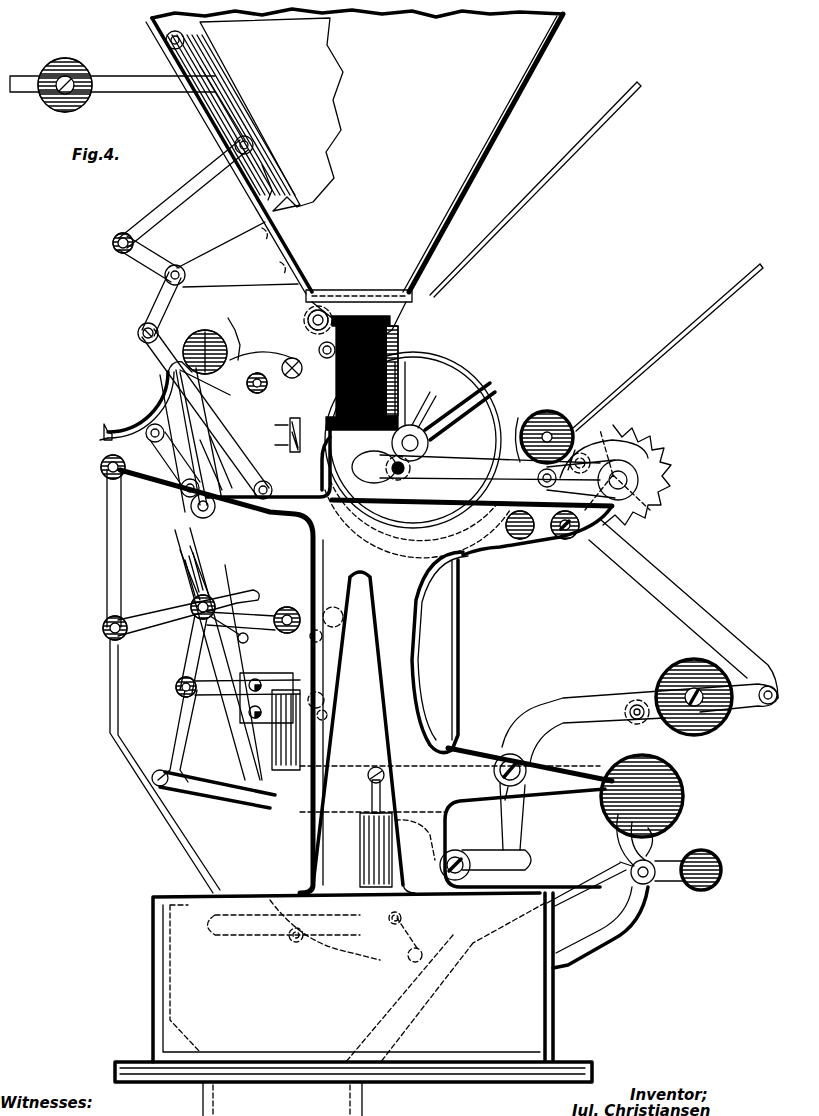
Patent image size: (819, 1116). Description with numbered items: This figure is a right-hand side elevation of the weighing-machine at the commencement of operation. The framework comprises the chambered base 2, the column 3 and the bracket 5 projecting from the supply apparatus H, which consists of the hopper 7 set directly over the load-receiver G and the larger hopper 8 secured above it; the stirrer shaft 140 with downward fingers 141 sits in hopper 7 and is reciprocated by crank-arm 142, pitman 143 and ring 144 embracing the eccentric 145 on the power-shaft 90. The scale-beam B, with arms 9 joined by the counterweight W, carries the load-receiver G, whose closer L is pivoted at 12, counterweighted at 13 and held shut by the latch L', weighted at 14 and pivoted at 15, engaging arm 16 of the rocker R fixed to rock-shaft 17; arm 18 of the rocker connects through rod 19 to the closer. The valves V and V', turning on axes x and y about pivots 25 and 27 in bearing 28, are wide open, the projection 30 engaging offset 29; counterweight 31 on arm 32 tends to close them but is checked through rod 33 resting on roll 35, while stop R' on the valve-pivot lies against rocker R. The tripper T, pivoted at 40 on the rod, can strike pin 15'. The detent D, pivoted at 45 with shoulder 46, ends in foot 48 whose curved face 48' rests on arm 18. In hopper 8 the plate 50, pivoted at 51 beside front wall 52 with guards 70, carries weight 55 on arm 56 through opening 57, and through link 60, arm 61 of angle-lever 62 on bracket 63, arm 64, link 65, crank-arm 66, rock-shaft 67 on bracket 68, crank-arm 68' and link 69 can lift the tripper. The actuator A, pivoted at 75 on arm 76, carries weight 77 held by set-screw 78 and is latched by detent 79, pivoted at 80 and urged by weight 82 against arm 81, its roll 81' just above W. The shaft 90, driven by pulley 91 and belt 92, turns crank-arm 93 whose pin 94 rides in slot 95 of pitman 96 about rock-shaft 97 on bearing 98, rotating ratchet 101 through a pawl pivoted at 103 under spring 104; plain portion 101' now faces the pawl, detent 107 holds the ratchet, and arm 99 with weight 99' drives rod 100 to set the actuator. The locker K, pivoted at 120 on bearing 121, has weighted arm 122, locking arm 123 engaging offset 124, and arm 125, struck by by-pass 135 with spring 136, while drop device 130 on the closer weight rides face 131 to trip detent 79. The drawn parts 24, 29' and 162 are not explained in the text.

The chambered base 2 is at (170, 980).
The column 3 is at (416, 652).
The bracket 5 is at (385, 320).
The hopper 7 is at (398, 322).
The hopper 8 is at (486, 128).
The arm 9 is at (352, 800).
The pivot 12 is at (300, 942).
The counterweight 13 is at (393, 958).
The counterweight 14 is at (328, 645).
The pivot 15 is at (286, 630).
The pin 15' is at (229, 642).
The arm 16 is at (200, 622).
The rock-shaft 17 is at (160, 495).
The arm 18 is at (170, 455).
The rod 19 is at (230, 736).
The slide 24 is at (290, 436).
The pivot 25 is at (280, 362).
The pivot 27 is at (215, 458).
The bearing 28 is at (362, 373).
The stop or offset 29 is at (176, 374).
The roller 29' is at (200, 340).
The lateral projection 30 is at (208, 433).
The counterweight 31 is at (150, 325).
The arm 32 is at (236, 325).
The rod 33 is at (172, 718).
The antifriction-roll 35 is at (155, 785).
The pivot 40 is at (196, 616).
The pivot 45 is at (345, 320).
The shoulder 46 is at (320, 345).
The foot 48 is at (87, 420).
The under curved face 48' is at (82, 437).
The plate 50 is at (210, 110).
The pivot 51 is at (165, 42).
The forward wall 52 is at (262, 196).
The weight 55 is at (60, 62).
The arm 56 is at (130, 80).
The opening 57 is at (196, 72).
The link 60 is at (108, 553).
The arm 61 is at (118, 480).
The angle-lever 62 is at (175, 526).
The bracket 63 is at (195, 556).
The arm 64 is at (255, 488).
The link 65 is at (150, 342).
The crank-arm 66 is at (163, 290).
The rock-shaft 67 is at (188, 273).
The bracket 68 is at (237, 254).
The crank-arm 68' is at (133, 257).
The link 69 is at (175, 200).
The flexible guard 70 is at (232, 140).
The pivot 75 is at (526, 764).
The arm 76 is at (468, 760).
The weight 77 is at (726, 712).
The set-screw 78 is at (694, 688).
The detent 79 is at (495, 860).
The pivot 80 is at (460, 850).
The arm 81 is at (525, 816).
The roll 81' is at (630, 728).
The weight 82 is at (400, 850).
The power-shaft 90 is at (460, 411).
The driver 91 is at (470, 405).
The belt 92 is at (672, 345).
The crank-arm 93 is at (375, 478).
The pin 94 is at (395, 506).
The longitudinal slot 95 is at (410, 470).
The pitman 96 is at (462, 462).
The rock-shaft 97 is at (622, 478).
The bearing 98 is at (605, 535).
The arm 99 is at (590, 447).
The weight 99' is at (547, 427).
The rod 100 is at (695, 580).
The ratchet 101 is at (647, 475).
The plain portion 101' is at (609, 439).
The pivot 103 is at (572, 445).
The spring 104 is at (530, 430).
The weighted detent 107 is at (566, 545).
The pivot 120 is at (636, 882).
The bearing 121 is at (600, 938).
The weighted arm 122 is at (716, 846).
The arm 123 is at (618, 832).
The offset 124 is at (680, 815).
The longitudinal arm 125 is at (600, 888).
The drop device 130 is at (390, 925).
The curved face 131 is at (360, 880).
The by-pass tripper 135 is at (412, 965).
The spring 136 is at (425, 940).
The shaft 140 is at (338, 300).
The fingers 141 is at (255, 370).
The crank-arm 142 is at (305, 322).
The pitman 143 is at (400, 380).
The ring 144 is at (434, 400).
The eccentric 145 is at (412, 440).
The roller 162 is at (524, 541).
The secondary actuator A is at (585, 703).
The scale-beam B is at (525, 838).
The detent D is at (140, 398).
The load-receiver G is at (112, 680).
The supply apparatus H is at (535, 189).
The locker K is at (647, 880).
The closer L is at (284, 939).
The latch L' is at (248, 608).
The rocker R is at (268, 492).
The stop R' is at (338, 463).
The tripper lever T is at (188, 613).
The main valve V is at (159, 374).
The valve V' is at (180, 441).
The counterweight W is at (653, 796).
The valve axis x is at (304, 368).
The valve axis y is at (293, 435).